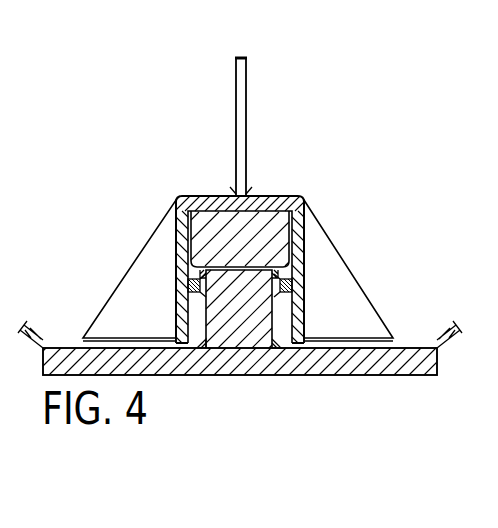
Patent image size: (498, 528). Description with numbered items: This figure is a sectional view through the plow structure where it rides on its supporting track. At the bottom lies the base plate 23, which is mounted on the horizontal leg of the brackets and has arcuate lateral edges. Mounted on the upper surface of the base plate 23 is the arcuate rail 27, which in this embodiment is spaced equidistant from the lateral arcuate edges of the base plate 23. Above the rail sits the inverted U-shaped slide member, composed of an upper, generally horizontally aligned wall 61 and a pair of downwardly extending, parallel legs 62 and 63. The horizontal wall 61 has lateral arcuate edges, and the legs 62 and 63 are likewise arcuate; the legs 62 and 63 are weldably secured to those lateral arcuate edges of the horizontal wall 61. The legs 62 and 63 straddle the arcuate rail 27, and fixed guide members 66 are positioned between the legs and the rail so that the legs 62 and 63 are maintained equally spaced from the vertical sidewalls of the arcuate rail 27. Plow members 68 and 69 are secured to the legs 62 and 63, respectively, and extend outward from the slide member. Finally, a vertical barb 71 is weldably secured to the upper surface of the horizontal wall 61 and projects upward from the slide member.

The vertical barb 71 is at (239, 118).
The upper horizontally aligned wall 61 is at (267, 196).
The fixed guide member 66 is at (275, 230).
The plow member 68 is at (128, 272).
The plow member 69 is at (358, 271).
The leg 62 is at (183, 270).
The leg 63 is at (297, 271).
The arcuate rail 27 is at (257, 327).
The base plate 23 is at (387, 368).